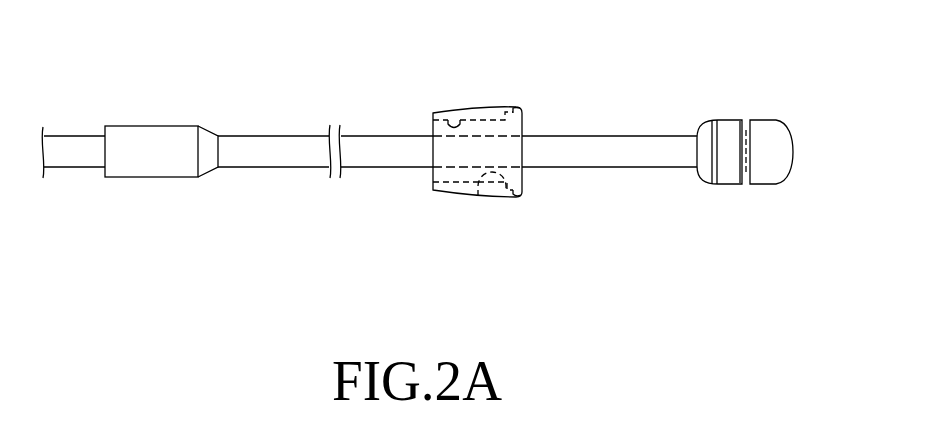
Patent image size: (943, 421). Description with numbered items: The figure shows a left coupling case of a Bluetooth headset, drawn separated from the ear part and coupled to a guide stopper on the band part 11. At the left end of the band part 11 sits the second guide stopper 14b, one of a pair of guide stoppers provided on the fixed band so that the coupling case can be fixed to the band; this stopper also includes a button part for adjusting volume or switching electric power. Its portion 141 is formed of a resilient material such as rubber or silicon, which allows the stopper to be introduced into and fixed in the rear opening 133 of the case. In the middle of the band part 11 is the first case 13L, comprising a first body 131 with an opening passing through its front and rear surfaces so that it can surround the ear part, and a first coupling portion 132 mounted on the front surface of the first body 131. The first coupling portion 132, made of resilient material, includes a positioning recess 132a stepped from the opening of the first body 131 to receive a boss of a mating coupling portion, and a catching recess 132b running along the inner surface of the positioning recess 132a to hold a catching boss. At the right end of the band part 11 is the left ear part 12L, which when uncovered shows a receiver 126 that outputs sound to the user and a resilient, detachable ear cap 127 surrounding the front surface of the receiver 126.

The band part 11 is at (277, 135).
The second guide stopper 14b is at (145, 134).
The resilient portion of second guide stopper 141 is at (208, 124).
The first case 13L is at (465, 158).
The first body 131 is at (483, 112).
The first coupling portion 132 is at (513, 110).
The rear opening 133 is at (456, 122).
The positioning recess 132a is at (478, 196).
The catching recess 132b is at (517, 200).
The left ear part 12L is at (745, 147).
The right receiver 126 is at (728, 172).
The right ear cap 127 is at (778, 170).